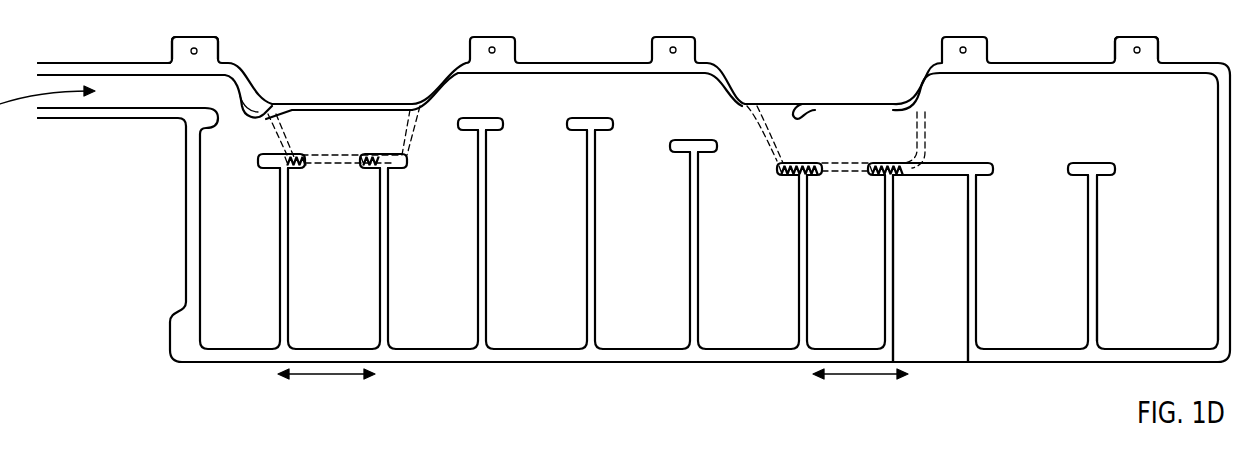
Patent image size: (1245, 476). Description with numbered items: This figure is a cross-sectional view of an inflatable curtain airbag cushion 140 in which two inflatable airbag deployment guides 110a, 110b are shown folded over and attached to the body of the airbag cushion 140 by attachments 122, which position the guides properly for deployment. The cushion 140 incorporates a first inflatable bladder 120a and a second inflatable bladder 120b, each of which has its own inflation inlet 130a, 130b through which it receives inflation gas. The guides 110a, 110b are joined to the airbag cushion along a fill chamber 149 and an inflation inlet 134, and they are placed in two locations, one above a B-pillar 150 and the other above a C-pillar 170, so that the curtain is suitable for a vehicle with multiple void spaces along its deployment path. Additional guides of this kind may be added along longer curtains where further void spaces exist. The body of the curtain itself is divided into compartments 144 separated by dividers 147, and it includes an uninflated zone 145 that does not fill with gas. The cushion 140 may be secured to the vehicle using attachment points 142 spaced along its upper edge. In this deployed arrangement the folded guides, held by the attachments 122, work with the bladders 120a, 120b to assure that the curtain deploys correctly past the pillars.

The inflatable airbag deployment guide 110a is at (928, 35).
The inflatable airbag deployment guide 110b is at (350, 30).
The first inflatable bladder 120a is at (883, 132).
The second inflatable bladder 120b is at (381, 127).
The attachments 122 is at (361, 157).
The inflation inlet 130a is at (763, 102).
The inflation inlet 130b is at (233, 74).
The inflation inlet 134 is at (142, 93).
The airbag cushion 140 is at (1065, 53).
The attachment points 142 is at (492, 48).
The compartments 144 is at (1169, 257).
The uninflated zone 145 is at (941, 258).
The dividers 147 is at (585, 267).
The fill chamber 149 is at (597, 98).
The B-pillar 150 is at (822, 395).
The C-pillar 170 is at (290, 394).